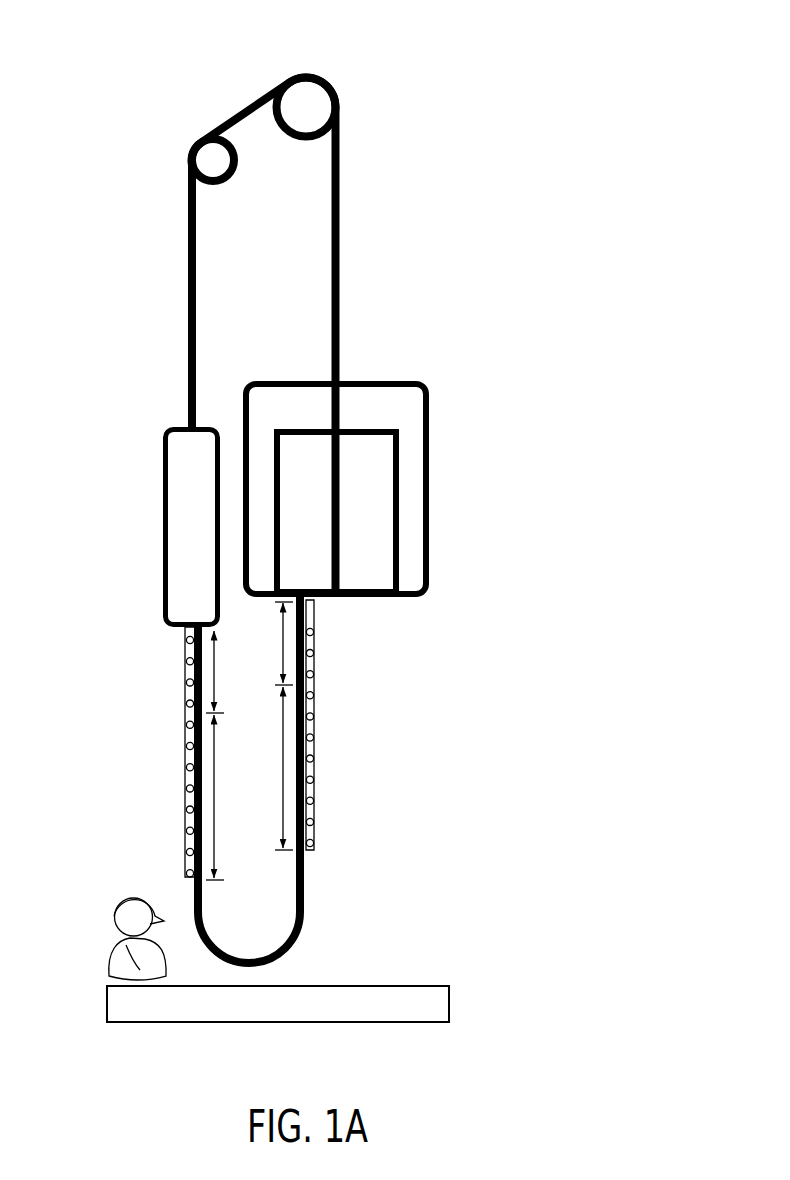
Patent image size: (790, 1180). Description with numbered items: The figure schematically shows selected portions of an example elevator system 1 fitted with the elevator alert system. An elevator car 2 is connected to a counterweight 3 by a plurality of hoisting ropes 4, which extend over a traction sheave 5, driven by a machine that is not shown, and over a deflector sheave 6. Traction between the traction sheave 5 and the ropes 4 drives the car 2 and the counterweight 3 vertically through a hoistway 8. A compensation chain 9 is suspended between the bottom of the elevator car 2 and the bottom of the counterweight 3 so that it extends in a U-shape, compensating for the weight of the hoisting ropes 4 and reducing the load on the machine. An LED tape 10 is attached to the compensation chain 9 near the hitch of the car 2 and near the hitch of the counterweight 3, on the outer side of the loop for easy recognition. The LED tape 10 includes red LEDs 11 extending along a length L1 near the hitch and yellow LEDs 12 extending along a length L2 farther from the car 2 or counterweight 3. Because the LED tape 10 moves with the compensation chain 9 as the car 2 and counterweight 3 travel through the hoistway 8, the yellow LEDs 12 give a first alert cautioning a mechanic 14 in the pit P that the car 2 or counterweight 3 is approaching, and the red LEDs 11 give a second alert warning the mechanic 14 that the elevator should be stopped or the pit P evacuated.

The elevator system 1 is at (259, 310).
The elevator car 2 is at (430, 437).
The counterweight 3 is at (163, 505).
The hoisting ropes 4 is at (340, 250).
The traction sheave 5 is at (331, 82).
The deflector sheave 6 is at (188, 160).
The hoistway 8 is at (164, 362).
The compensation chain 9 is at (305, 908).
The LED tape 10 is at (258, 740).
The red LEDs 11 is at (172, 632).
The yellow LEDs 12 is at (172, 717).
The mechanic 14 is at (118, 903).
The pit P is at (356, 974).
The length of red LEDs L1 is at (249, 657).
The length of yellow LEDs L2 is at (249, 783).